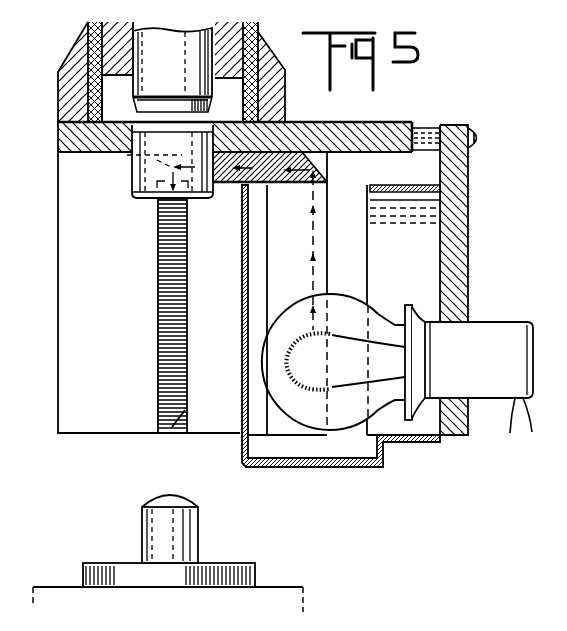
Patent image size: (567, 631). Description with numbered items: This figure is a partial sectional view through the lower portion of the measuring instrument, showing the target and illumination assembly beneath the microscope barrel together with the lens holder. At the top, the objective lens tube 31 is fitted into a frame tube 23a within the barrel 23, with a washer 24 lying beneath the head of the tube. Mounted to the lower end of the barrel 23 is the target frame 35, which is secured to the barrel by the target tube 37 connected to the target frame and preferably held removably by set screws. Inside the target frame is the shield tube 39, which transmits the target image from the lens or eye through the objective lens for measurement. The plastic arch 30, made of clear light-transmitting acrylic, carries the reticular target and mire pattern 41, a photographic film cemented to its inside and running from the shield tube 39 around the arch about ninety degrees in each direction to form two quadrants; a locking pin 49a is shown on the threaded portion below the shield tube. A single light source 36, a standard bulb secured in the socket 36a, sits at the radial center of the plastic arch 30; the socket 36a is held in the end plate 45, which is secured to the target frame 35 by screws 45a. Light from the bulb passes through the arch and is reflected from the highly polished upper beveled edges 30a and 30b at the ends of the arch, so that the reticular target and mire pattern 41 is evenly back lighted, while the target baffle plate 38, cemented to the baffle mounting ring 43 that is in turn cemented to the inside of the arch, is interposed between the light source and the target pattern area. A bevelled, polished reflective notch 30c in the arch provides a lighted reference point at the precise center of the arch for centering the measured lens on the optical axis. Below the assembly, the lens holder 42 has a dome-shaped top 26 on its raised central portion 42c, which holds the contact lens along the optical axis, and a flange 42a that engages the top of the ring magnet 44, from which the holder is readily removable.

The barrel 23 is at (88, 31).
The frame tube 23a is at (232, 85).
The washer 24 is at (142, 100).
The dome head of stud 26 is at (163, 502).
The plastic arch 30 is at (330, 242).
The upper beveled edge 30a is at (140, 163).
The upper beveled edge 30b is at (324, 172).
The reflective notch 30c is at (230, 153).
The objective lens tube 31 is at (177, 58).
The target frame 35 is at (82, 137).
The light source 36 is at (343, 303).
The socket 36a is at (493, 333).
The target tube 37 is at (72, 88).
The target baffle plate 38 is at (244, 276).
The shield tube 39 is at (140, 190).
The reticular target and mire pattern 41 is at (157, 268).
The lens holder 42 is at (115, 563).
The flange 42a is at (213, 575).
The raised central portion 42c is at (180, 535).
The baffle mounting ring 43 is at (296, 250).
The ring magnet 44 is at (290, 587).
The end plate 45 is at (457, 242).
The screws 45a is at (480, 133).
The locking pin 49a is at (184, 420).